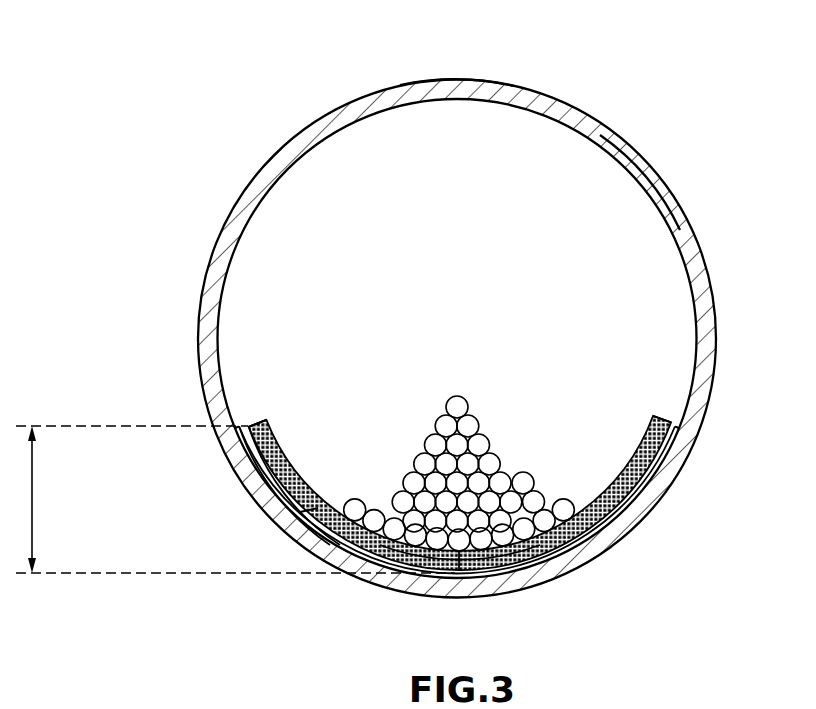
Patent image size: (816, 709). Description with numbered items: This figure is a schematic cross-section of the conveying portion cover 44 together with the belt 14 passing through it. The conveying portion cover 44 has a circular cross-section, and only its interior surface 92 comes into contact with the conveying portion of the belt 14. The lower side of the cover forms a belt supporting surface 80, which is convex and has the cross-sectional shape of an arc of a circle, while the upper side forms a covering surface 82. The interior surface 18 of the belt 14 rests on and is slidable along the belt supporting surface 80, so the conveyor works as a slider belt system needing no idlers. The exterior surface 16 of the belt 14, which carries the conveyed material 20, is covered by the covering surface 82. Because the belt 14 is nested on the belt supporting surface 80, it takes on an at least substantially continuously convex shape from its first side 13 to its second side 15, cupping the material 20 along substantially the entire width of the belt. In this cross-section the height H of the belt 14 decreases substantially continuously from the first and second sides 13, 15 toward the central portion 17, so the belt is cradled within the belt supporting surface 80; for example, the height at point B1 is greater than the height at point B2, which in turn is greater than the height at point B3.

The conveying portion cover 44 is at (708, 290).
The covering surface 82 is at (499, 96).
The interior surface of the conveying portion cover 92 is at (648, 198).
The belt supporting surface 80 is at (555, 567).
The interior surface 18 is at (280, 512).
The belt 14 is at (642, 475).
The exterior surface 16 is at (325, 495).
The central portion 17 is at (465, 565).
The material 20 is at (459, 398).
The first side 13 is at (251, 426).
The second side 15 is at (672, 421).
The point B1 is at (249, 438).
The point B2 is at (309, 521).
The point B3 is at (458, 569).
The height of the belt H is at (235, 499).